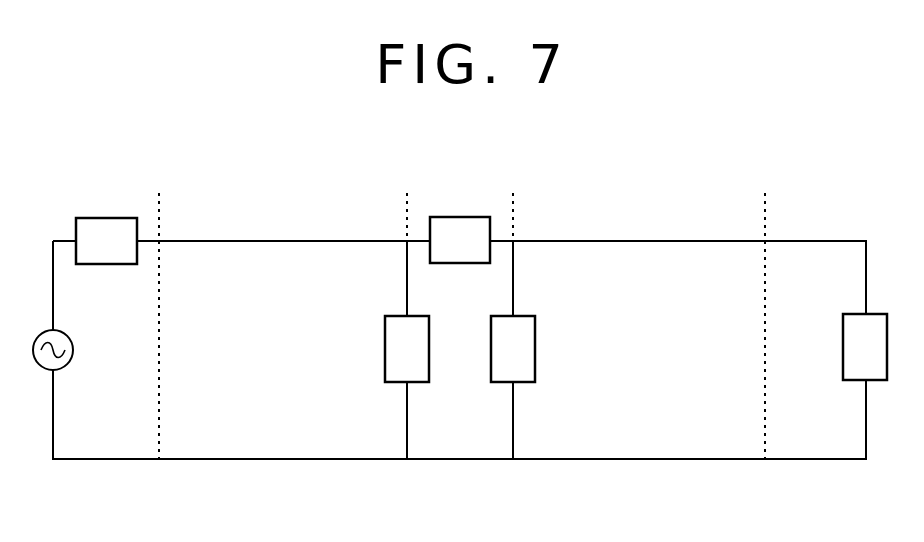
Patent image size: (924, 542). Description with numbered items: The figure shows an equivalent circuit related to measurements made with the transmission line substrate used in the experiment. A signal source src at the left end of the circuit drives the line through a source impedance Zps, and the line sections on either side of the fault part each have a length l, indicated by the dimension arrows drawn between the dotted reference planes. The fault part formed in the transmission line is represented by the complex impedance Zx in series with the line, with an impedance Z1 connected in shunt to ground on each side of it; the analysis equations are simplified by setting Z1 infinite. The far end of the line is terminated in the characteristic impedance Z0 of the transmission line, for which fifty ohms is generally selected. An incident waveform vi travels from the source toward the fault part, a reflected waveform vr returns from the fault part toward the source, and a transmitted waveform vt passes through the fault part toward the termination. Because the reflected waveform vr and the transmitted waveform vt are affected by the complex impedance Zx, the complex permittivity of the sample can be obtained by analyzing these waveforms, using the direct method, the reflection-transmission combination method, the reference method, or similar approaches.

The power source impedance Zps is at (106, 241).
The complex impedance Zx is at (460, 240).
The impedance Z1 is at (460, 349).
The characteristic impedance of the transmission line Z0 is at (865, 347).
The incident voltage wave vi is at (154, 278).
The reflected waveform vr is at (155, 303).
The transmitted waveform vt is at (760, 272).
The transmission line length l is at (161, 203).
The AC signal source src is at (53, 350).